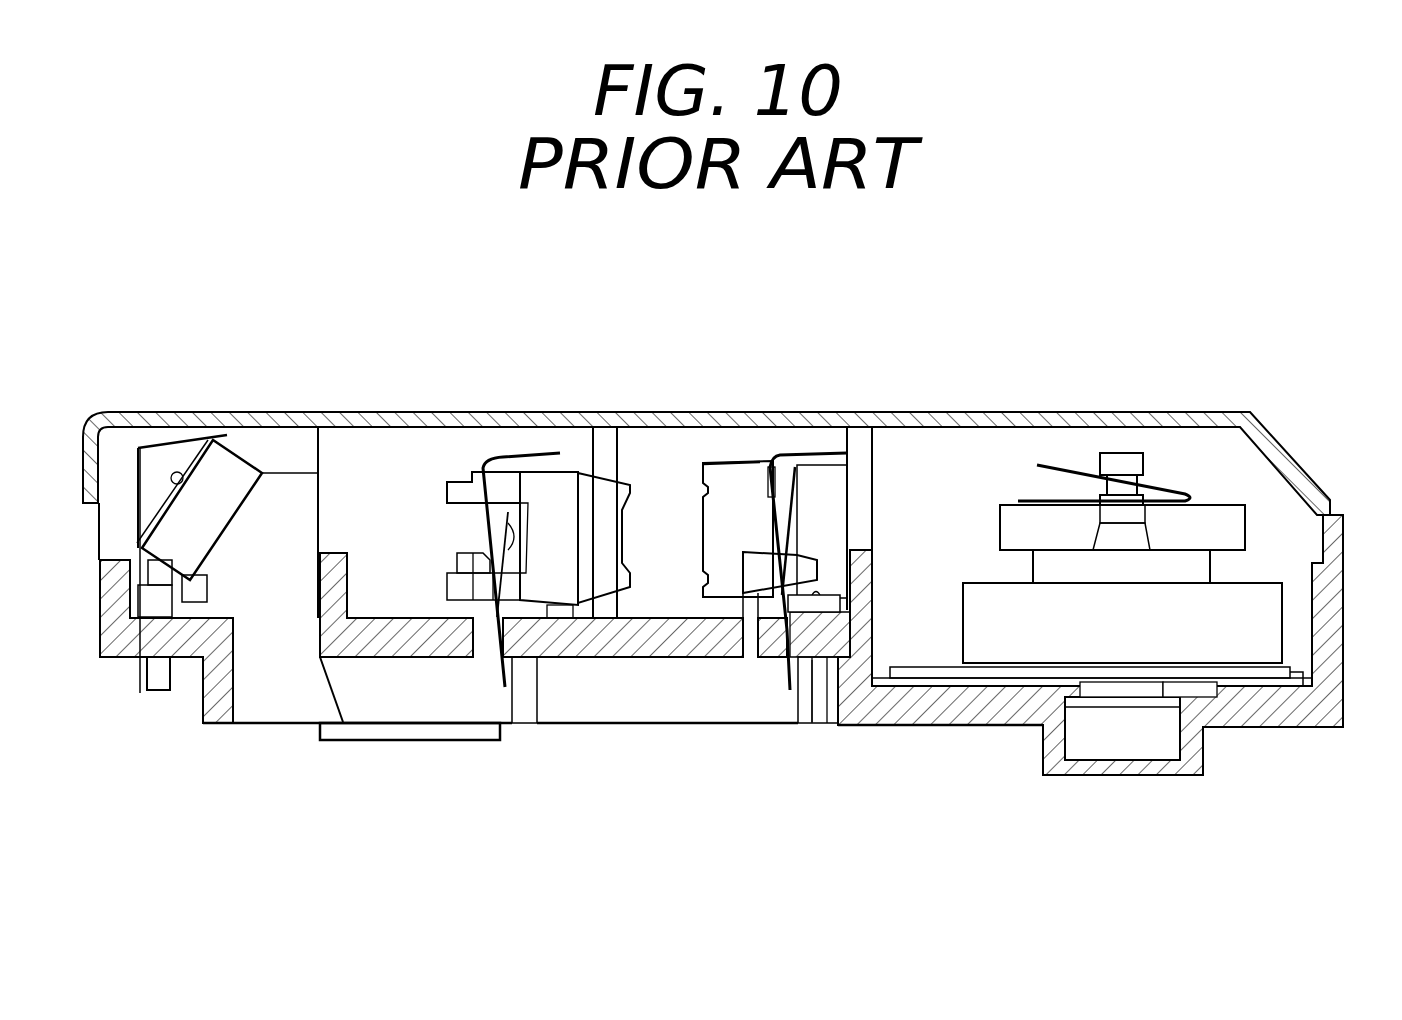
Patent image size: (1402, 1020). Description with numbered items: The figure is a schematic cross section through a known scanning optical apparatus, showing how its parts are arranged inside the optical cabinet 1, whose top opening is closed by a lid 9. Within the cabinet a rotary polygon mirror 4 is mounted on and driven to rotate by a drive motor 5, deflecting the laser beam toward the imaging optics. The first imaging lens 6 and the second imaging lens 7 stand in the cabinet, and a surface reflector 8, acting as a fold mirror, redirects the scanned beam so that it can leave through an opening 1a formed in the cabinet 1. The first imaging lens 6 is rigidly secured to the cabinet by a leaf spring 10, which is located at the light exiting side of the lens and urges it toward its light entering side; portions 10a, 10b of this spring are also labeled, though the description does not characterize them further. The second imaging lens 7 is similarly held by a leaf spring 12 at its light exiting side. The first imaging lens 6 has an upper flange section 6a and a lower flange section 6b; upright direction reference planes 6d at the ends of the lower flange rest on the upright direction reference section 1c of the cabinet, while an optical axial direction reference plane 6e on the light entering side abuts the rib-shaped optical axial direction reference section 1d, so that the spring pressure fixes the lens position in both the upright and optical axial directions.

The optical cabinet 1 is at (1272, 707).
The opening 1a is at (276, 695).
The upright direction reference section 1c is at (812, 723).
The rib-shaped optical axial direction reference section 1d is at (853, 470).
The rotary polygon mirror 4 is at (1218, 517).
The drive motor 5 is at (1260, 630).
The first imaging lens 6 is at (722, 585).
The upper flange section 6a is at (762, 467).
The lower flange section 6b is at (790, 585).
The upright direction reference plane 6d is at (840, 597).
The optical axial direction reference plane 6e is at (872, 490).
The second imaging lens 7 is at (568, 578).
The surface reflector 8 is at (196, 483).
The lid 9 is at (1112, 413).
The leaf spring 10 is at (806, 438).
The spring leg 10a is at (828, 460).
The spring contact portion 10b is at (770, 523).
The leaf spring 12 is at (529, 440).